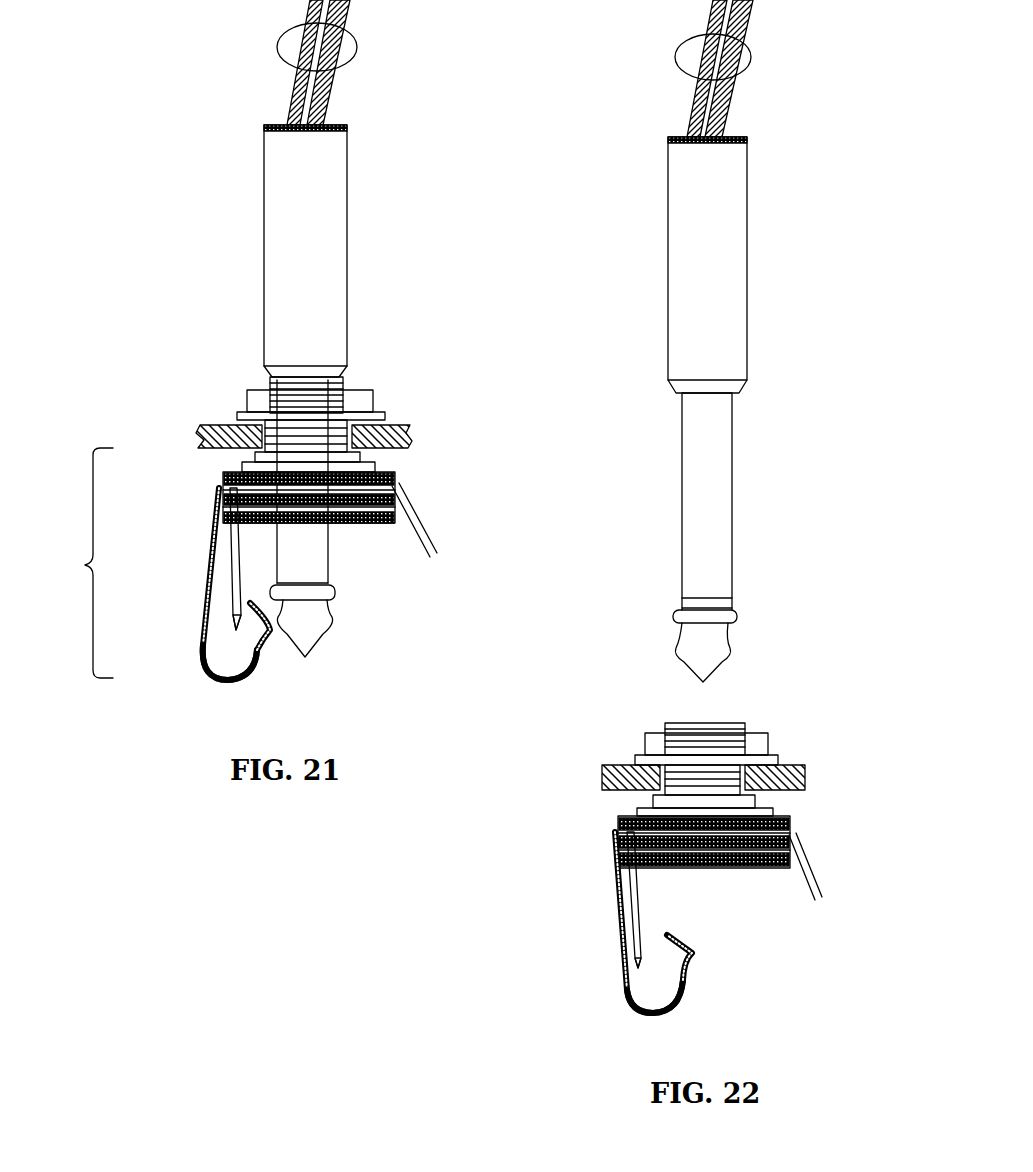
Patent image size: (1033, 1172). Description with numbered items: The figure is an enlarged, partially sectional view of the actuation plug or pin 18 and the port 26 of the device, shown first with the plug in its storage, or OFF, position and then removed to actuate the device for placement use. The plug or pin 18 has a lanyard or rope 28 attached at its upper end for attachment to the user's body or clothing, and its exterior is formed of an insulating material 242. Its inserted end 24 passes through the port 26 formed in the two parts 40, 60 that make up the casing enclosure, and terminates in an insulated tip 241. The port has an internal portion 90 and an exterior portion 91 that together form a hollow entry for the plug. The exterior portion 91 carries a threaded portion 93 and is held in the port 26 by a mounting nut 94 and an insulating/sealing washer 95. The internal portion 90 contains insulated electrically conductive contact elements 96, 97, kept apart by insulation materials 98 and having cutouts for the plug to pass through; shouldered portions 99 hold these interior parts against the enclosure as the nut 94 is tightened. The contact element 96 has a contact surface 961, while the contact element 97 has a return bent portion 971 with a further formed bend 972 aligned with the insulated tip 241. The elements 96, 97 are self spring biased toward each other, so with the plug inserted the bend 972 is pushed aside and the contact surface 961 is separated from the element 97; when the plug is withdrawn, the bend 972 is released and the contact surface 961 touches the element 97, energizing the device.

In FIG. 21, the plug or pin 18 is at (347, 240).
In FIG. 22, the plug or pin 18 is at (748, 232).
In FIG. 21, the plug or pin end 24 is at (305, 552).
In FIG. 22, the plug or pin end 24 is at (732, 505).
In FIG. 21, the insulated tip 241 is at (315, 627).
In FIG. 22, the insulated tip 241 is at (717, 652).
In FIG. 21, the insulating material 242 is at (286, 391).
In FIG. 22, the insulating material 242 is at (710, 409).
In FIG. 21, the port 26 is at (289, 510).
In FIG. 22, the port 26 is at (663, 869).
In FIG. 21, the lanyard or rope 28 is at (356, 38).
In FIG. 22, the lanyard or rope 28 is at (748, 57).
In FIG. 21, the casing part 40 is at (370, 430).
In FIG. 22, the casing part 40 is at (633, 773).
In FIG. 21, the casing part 60 is at (408, 437).
In FIG. 22, the casing part 60 is at (600, 772).
In FIG. 21, the internal portion of the port 90 is at (215, 563).
In FIG. 22, the internal portion of the port 90 is at (598, 825).
In FIG. 21, the exterior portion of the port 91 is at (317, 370).
In FIG. 22, the exterior portion of the port 91 is at (760, 720).
In FIG. 21, the threaded portion 93 is at (350, 390).
In FIG. 22, the threaded portion 93 is at (706, 744).
In FIG. 21, the mounting nut 94 is at (380, 410).
In FIG. 22, the mounting nut 94 is at (706, 760).
In FIG. 21, the insulating/sealing washer 95 is at (380, 418).
In FIG. 22, the insulating/sealing washer 95 is at (704, 801).
In FIG. 21, the contact element 96 is at (232, 550).
In FIG. 22, the contact element 96 is at (615, 892).
In FIG. 21, the contact element 97 is at (208, 583).
In FIG. 22, the contact element 97 is at (618, 910).
In FIG. 21, the contact surface 961 is at (236, 626).
In FIG. 22, the contact surface 961 is at (625, 950).
In FIG. 21, the return bent portion 971 is at (233, 683).
In FIG. 22, the return bent portion 971 is at (640, 1017).
In FIG. 21, the further formed bend 972 is at (272, 643).
In FIG. 22, the further formed bend 972 is at (695, 957).
In FIG. 21, the insulation materials 98 is at (224, 500).
In FIG. 21, the shouldered portions 99 is at (378, 468).
In FIG. 22, the shouldered portions 99 is at (705, 812).